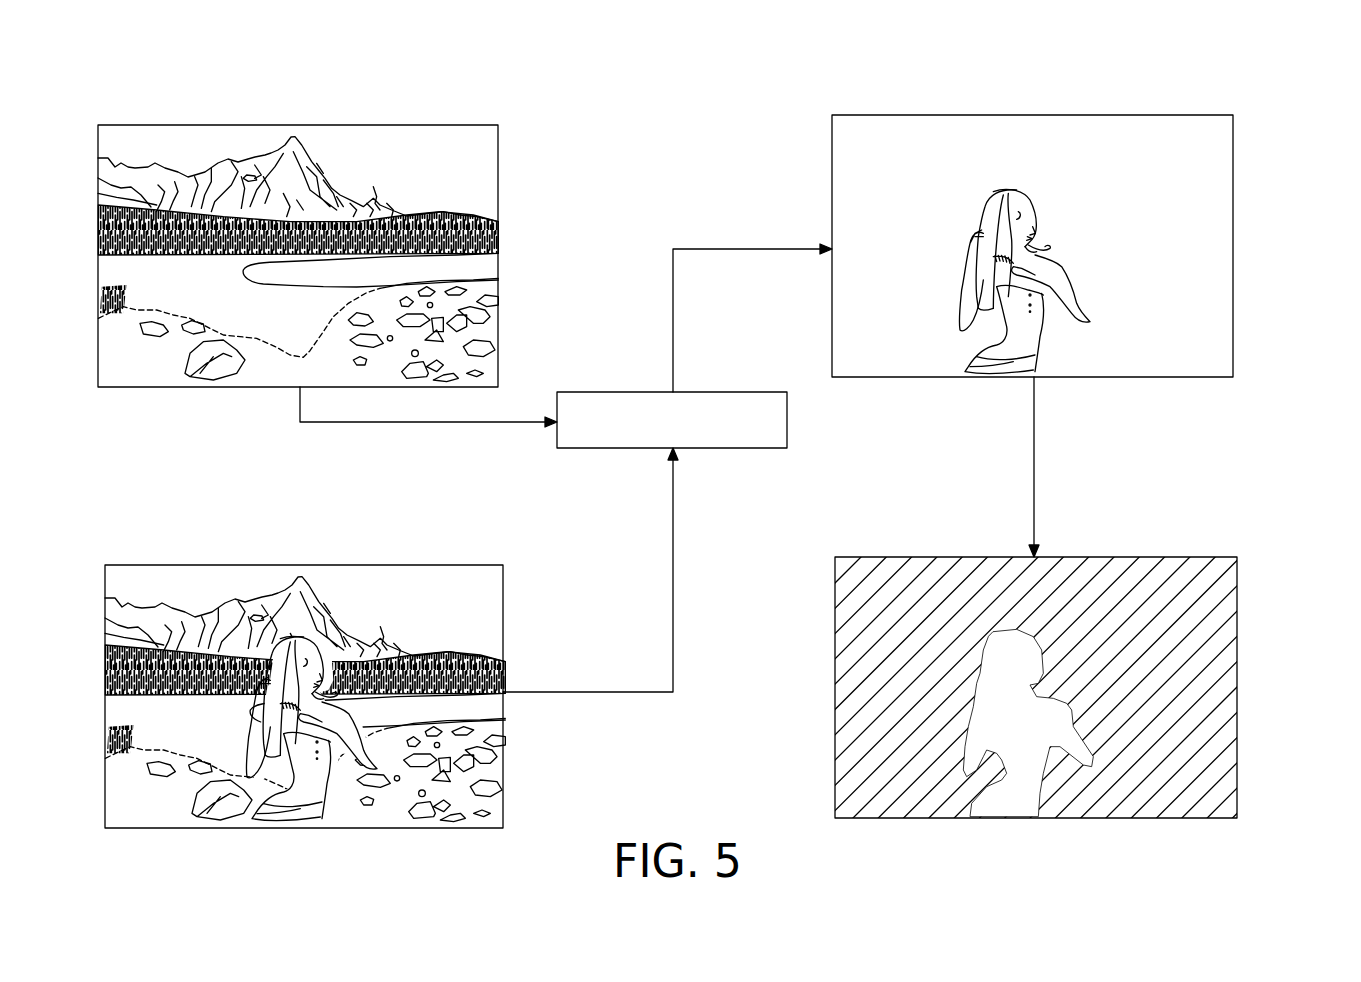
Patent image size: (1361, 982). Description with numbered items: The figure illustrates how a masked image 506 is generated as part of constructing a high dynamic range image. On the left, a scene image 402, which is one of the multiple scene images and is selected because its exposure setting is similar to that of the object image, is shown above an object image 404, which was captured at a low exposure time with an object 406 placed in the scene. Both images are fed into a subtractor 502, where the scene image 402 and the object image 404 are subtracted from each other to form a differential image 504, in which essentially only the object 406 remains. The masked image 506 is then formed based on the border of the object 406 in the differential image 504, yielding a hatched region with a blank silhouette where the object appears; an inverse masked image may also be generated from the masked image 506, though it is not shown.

The scene image 402 is at (309, 112).
The object image 404 is at (535, 788).
The object 406 is at (1087, 306).
The subtractor 502 is at (598, 392).
The differential image 504 is at (1101, 114).
The masked image 506 is at (1200, 663).